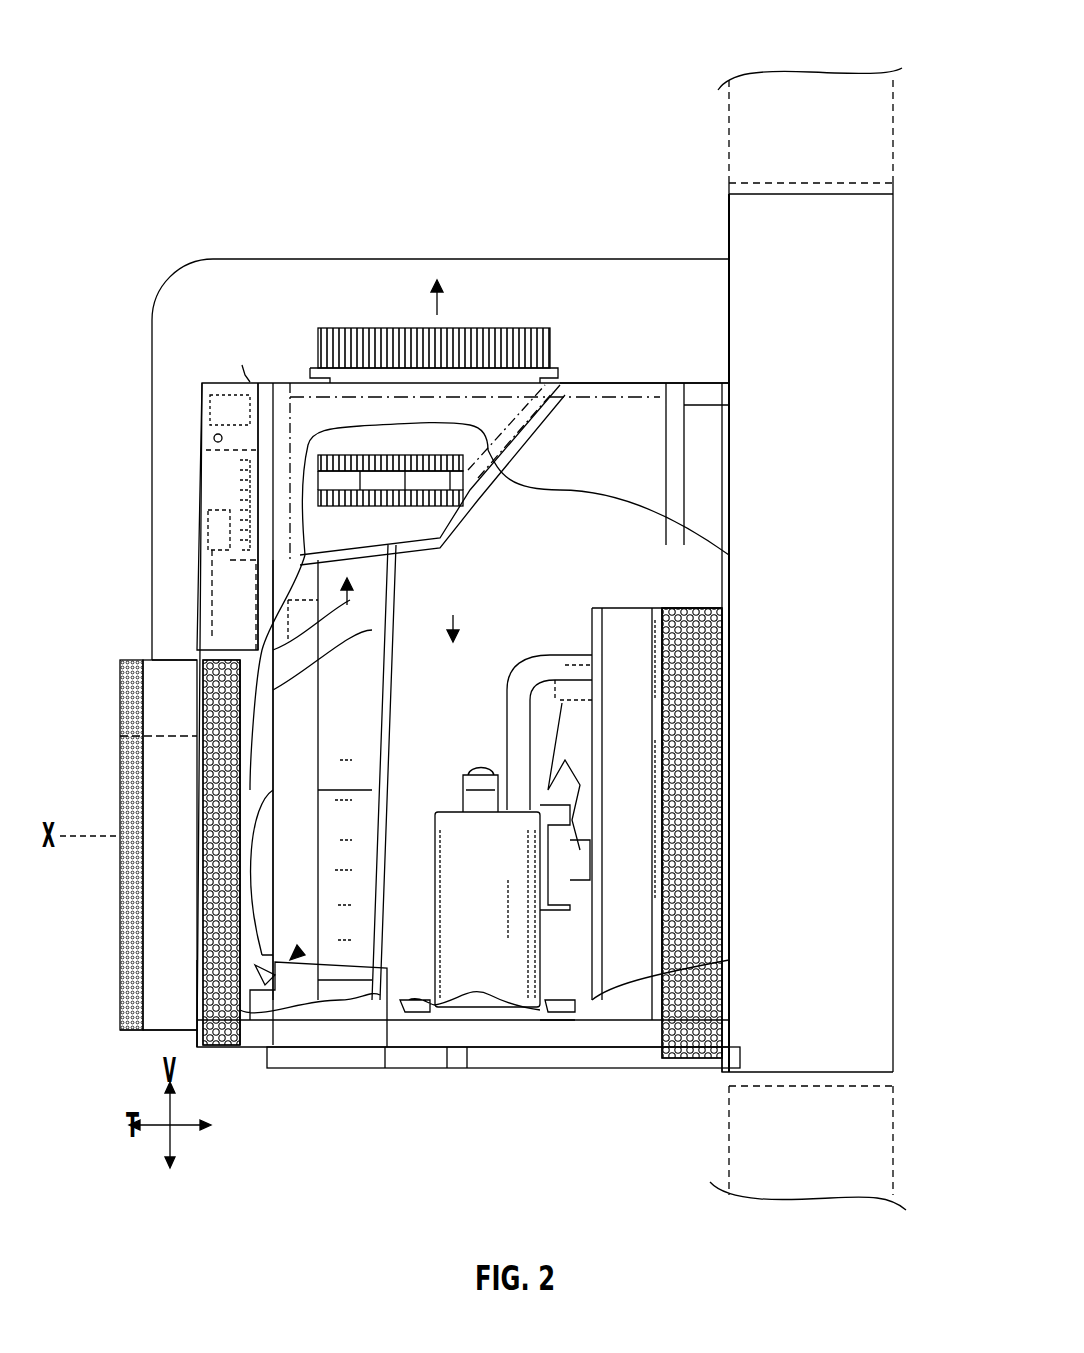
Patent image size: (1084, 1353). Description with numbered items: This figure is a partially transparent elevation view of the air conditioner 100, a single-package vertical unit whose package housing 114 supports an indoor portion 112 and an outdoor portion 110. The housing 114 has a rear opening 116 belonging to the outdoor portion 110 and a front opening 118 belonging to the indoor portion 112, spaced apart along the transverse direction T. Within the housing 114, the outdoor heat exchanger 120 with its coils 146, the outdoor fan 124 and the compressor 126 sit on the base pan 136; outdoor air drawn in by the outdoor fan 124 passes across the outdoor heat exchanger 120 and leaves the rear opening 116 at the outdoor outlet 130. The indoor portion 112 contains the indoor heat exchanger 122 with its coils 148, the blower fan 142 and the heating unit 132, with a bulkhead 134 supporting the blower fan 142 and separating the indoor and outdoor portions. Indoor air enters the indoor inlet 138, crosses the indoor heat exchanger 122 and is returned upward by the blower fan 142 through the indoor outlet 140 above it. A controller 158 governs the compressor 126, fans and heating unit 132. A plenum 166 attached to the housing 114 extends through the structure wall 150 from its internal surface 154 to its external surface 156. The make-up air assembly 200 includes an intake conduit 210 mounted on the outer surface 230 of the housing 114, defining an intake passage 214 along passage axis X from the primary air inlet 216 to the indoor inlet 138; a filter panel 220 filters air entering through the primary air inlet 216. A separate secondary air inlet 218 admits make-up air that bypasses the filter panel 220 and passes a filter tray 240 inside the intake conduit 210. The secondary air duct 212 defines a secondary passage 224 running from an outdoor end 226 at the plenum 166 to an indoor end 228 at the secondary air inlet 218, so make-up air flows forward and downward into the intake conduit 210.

The air conditioner 100 is at (262, 305).
The outdoor portion 110 is at (560, 555).
The indoor portion 112 is at (297, 950).
The package housing 114 is at (622, 380).
The rear opening 116 is at (733, 862).
The front opening 118 is at (197, 963).
The outdoor heat exchanger 120 is at (702, 608).
The indoor heat exchanger 122 is at (290, 690).
The outdoor fan 124 is at (580, 725).
The compressor 126 is at (455, 830).
The outdoor outlet 130 is at (735, 790).
The heating unit 132 is at (398, 508).
The bulkhead 134 is at (384, 668).
The base pan 136 is at (280, 1058).
The indoor inlet 138 is at (140, 665).
The indoor outlet 140 is at (492, 324).
The blower fan 142 is at (268, 805).
The coils 146 is at (700, 614).
The coils 148 is at (290, 745).
The structure wall 150 is at (815, 95).
The internal surface 154 is at (718, 143).
The external surface 156 is at (898, 160).
The controller 158 is at (240, 492).
The plenum 166 is at (862, 358).
The make-up air assembly 200 is at (340, 252).
The intake conduit 210 is at (172, 1010).
The secondary air duct 212 is at (577, 275).
The intake passage 214 is at (157, 930).
The primary air inlet 216 is at (135, 690).
The secondary air inlet 218 is at (191, 700).
The filter panel 220 is at (157, 1026).
The secondary passage 224 is at (608, 290).
The outdoor end 226 is at (738, 298).
The indoor end 228 is at (147, 636).
The outer surface 230 is at (655, 380).
The filter tray 240 is at (160, 737).